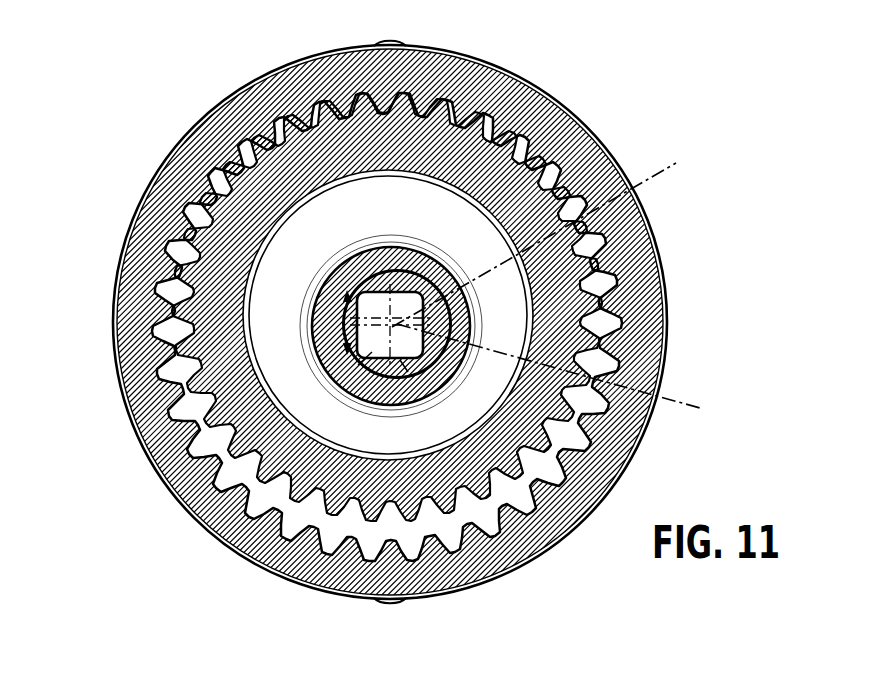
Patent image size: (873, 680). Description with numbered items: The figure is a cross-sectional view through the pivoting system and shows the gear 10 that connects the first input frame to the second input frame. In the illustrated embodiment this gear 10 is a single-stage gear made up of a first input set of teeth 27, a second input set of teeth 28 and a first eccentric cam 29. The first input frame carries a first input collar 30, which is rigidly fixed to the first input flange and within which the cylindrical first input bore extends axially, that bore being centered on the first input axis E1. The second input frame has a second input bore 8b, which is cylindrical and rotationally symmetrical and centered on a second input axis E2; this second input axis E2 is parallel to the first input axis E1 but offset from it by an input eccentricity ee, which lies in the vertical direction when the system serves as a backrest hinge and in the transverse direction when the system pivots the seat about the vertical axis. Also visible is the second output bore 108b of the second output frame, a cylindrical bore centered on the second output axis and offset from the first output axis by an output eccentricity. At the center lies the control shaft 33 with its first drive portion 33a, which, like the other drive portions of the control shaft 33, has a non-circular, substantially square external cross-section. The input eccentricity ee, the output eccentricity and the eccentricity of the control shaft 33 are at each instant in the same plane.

The gear 10 is at (576, 7).
The first input set of teeth 27 is at (490, 120).
The second input set of teeth 28 is at (395, 305).
The first eccentric cam 29 is at (428, 213).
The second input bore 8b is at (297, 203).
The second input axis E2 is at (547, 237).
The first input axis E1 is at (562, 373).
The input eccentricity ee is at (345, 312).
The first input collar 30 is at (345, 330).
The second output bore 108b is at (352, 358).
The control shaft 33 is at (358, 365).
The first drive portion 33a is at (408, 372).